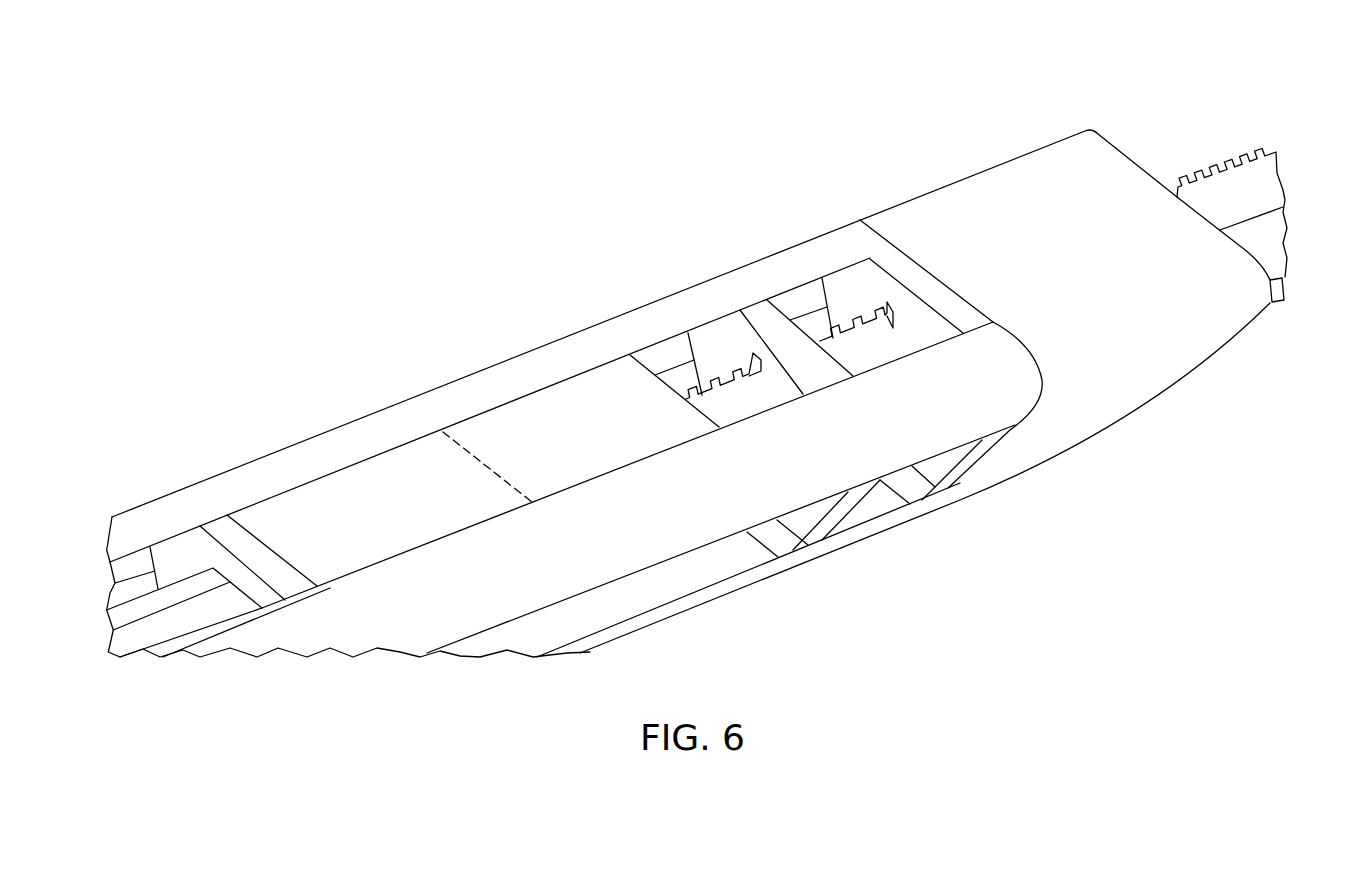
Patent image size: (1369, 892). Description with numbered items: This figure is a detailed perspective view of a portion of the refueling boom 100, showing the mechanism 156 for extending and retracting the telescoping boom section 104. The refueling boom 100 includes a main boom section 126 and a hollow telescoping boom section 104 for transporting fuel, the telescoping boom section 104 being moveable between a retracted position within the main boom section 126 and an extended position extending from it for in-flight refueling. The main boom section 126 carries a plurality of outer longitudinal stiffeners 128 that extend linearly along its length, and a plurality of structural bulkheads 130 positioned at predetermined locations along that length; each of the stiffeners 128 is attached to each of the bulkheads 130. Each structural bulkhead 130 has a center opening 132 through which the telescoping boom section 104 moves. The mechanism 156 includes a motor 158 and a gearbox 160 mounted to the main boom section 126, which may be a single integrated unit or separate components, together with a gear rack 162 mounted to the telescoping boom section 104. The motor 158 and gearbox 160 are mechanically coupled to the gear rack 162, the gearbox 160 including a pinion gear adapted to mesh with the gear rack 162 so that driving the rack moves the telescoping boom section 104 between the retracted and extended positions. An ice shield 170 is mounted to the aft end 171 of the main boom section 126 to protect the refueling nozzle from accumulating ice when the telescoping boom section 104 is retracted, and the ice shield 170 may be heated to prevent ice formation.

The refueling boom 100 is at (471, 180).
The telescoping boom section 104 is at (1283, 190).
The main boom section 126 is at (390, 400).
The outer longitudinal stiffeners 128 is at (330, 441).
The structural bulkheads 130 is at (775, 540).
The center opening 132 is at (748, 361).
The mechanism for extending and retracting the telescoping boom section 156 is at (494, 400).
The motor 158 is at (280, 503).
The gearbox 160 is at (580, 373).
The gear rack 162 is at (810, 325).
The ice shield 170 is at (970, 186).
The aft end 171 is at (1131, 111).